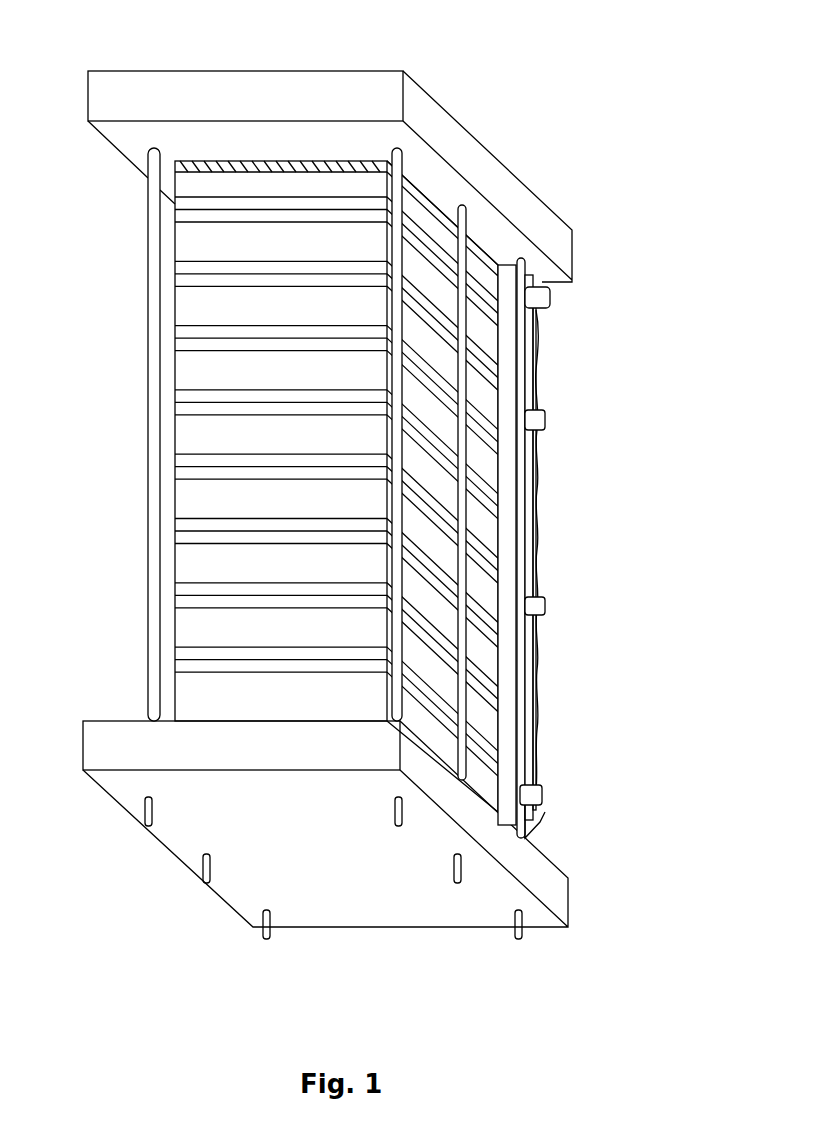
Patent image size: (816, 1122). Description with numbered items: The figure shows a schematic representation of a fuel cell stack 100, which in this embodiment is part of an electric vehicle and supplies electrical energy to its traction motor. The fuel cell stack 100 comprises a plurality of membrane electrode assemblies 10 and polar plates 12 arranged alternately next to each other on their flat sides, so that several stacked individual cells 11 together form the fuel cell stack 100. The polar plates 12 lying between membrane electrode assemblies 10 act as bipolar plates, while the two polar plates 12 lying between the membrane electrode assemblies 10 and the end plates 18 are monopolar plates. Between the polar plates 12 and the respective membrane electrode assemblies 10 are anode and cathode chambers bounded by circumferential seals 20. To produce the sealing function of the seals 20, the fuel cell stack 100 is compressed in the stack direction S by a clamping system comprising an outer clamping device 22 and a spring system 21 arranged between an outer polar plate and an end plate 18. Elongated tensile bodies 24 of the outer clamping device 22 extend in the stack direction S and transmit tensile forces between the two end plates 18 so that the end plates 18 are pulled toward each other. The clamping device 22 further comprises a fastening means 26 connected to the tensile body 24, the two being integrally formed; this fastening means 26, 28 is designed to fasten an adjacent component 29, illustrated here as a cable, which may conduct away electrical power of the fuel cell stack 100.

The fuel cell stack 100 is at (396, 472).
The end plate 18 is at (505, 187).
The spring system 21 is at (488, 248).
The fastening means 26 is at (616, 558).
The clamp 28 is at (552, 292).
The polar plate 12 is at (538, 340).
The stack direction S is at (658, 345).
The circumferential seal 20 is at (506, 503).
The membrane electrode assembly 10 is at (417, 486).
The outer clamping device 22 is at (527, 640).
The elongated tensile body 24 is at (535, 672).
The adjacent component 29 is at (537, 735).
The individual cell 11 is at (167, 406).